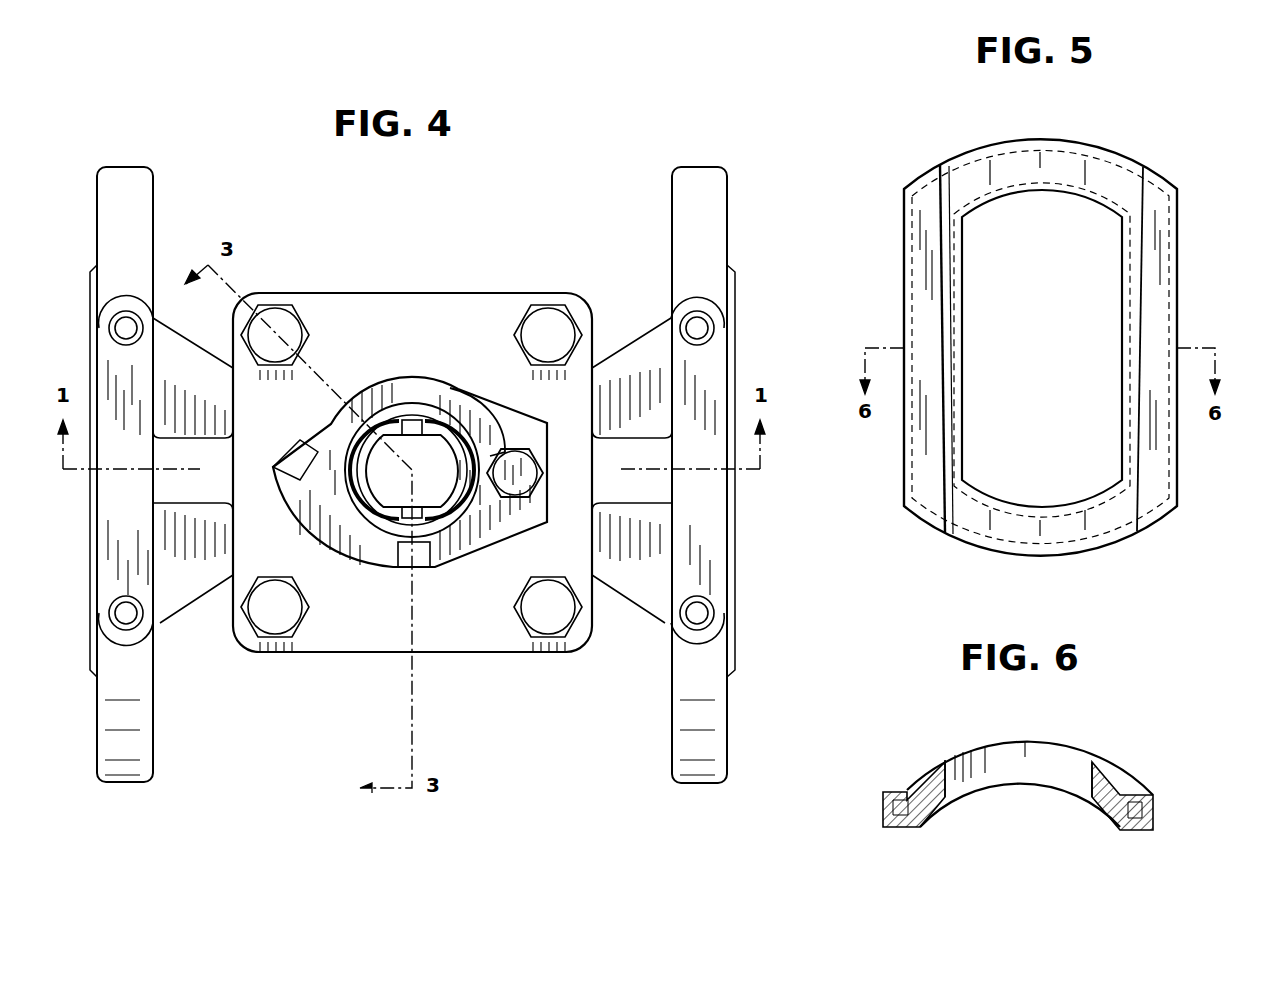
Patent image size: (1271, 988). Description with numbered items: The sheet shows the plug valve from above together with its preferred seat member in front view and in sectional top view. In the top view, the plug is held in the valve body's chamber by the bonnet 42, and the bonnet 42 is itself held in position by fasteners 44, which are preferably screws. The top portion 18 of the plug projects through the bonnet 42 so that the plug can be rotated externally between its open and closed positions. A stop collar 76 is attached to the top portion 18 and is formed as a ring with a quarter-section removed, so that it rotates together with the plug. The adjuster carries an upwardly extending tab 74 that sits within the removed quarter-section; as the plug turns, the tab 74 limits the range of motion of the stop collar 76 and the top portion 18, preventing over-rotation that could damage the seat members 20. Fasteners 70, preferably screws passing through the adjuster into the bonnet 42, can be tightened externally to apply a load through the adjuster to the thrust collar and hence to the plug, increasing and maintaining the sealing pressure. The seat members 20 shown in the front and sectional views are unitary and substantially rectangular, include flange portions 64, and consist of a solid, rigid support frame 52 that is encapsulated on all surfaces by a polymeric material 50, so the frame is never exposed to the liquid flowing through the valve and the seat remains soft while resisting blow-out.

In FIG. 4, the top portion 18 is at (422, 450).
In FIG. 5, the seat members 20 is at (942, 140).
In FIG. 6, the seat members 20 is at (912, 752).
In FIG. 4, the bonnet 42 is at (412, 472).
In FIG. 4, the fasteners 44 is at (563, 617).
In FIG. 5, the polymeric material 50 is at (1165, 183).
In FIG. 6, the polymeric material 50 is at (1130, 831).
In FIG. 5, the support frame 52 is at (1098, 170).
In FIG. 6, the support frame 52 is at (1135, 805).
In FIG. 5, the flange portions 64 is at (918, 283).
In FIG. 6, the flange portions 64 is at (900, 828).
In FIG. 4, the fasteners 70 is at (518, 460).
In FIG. 4, the tab 74 is at (422, 558).
In FIG. 4, the stop collar 76 is at (415, 390).